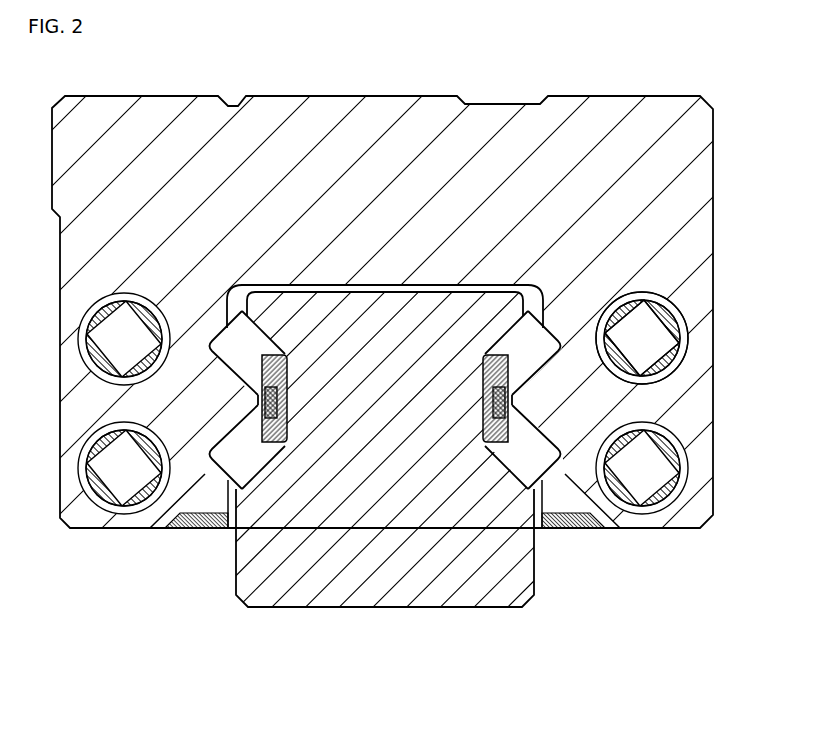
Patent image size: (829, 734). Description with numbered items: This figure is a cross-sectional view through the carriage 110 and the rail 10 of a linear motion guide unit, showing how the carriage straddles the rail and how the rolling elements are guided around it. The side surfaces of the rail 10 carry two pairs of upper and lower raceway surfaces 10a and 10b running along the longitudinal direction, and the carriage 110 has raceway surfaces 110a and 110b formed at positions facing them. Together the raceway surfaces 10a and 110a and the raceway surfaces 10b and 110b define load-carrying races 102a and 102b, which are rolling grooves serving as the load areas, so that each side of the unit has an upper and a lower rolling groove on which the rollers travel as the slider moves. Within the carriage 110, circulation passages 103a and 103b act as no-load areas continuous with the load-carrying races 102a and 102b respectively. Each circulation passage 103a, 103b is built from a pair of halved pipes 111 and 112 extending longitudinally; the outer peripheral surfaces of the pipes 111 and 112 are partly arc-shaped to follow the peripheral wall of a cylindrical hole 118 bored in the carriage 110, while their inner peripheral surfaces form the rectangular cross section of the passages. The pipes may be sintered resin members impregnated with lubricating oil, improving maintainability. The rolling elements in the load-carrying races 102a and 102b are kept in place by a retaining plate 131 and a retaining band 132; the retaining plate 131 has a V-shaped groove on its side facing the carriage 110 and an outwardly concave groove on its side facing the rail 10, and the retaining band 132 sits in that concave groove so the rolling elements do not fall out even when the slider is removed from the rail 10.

The rail 10 is at (400, 457).
The raceway surface 10a is at (238, 460).
The raceway surface 10b is at (238, 345).
The carriage 110 is at (405, 211).
The raceway surface 110a is at (222, 470).
The raceway surface 110b is at (227, 357).
The load-carrying race 102a is at (528, 460).
The load-carrying race 102b is at (530, 345).
The circulation passage 103a is at (673, 354).
The circulation passage 103b is at (650, 468).
The pipe 111 is at (662, 308).
The pipe 112 is at (690, 332).
The cylindrical hole 118 is at (648, 293).
The retaining plate 131 is at (495, 412).
The retaining band 132 is at (483, 415).